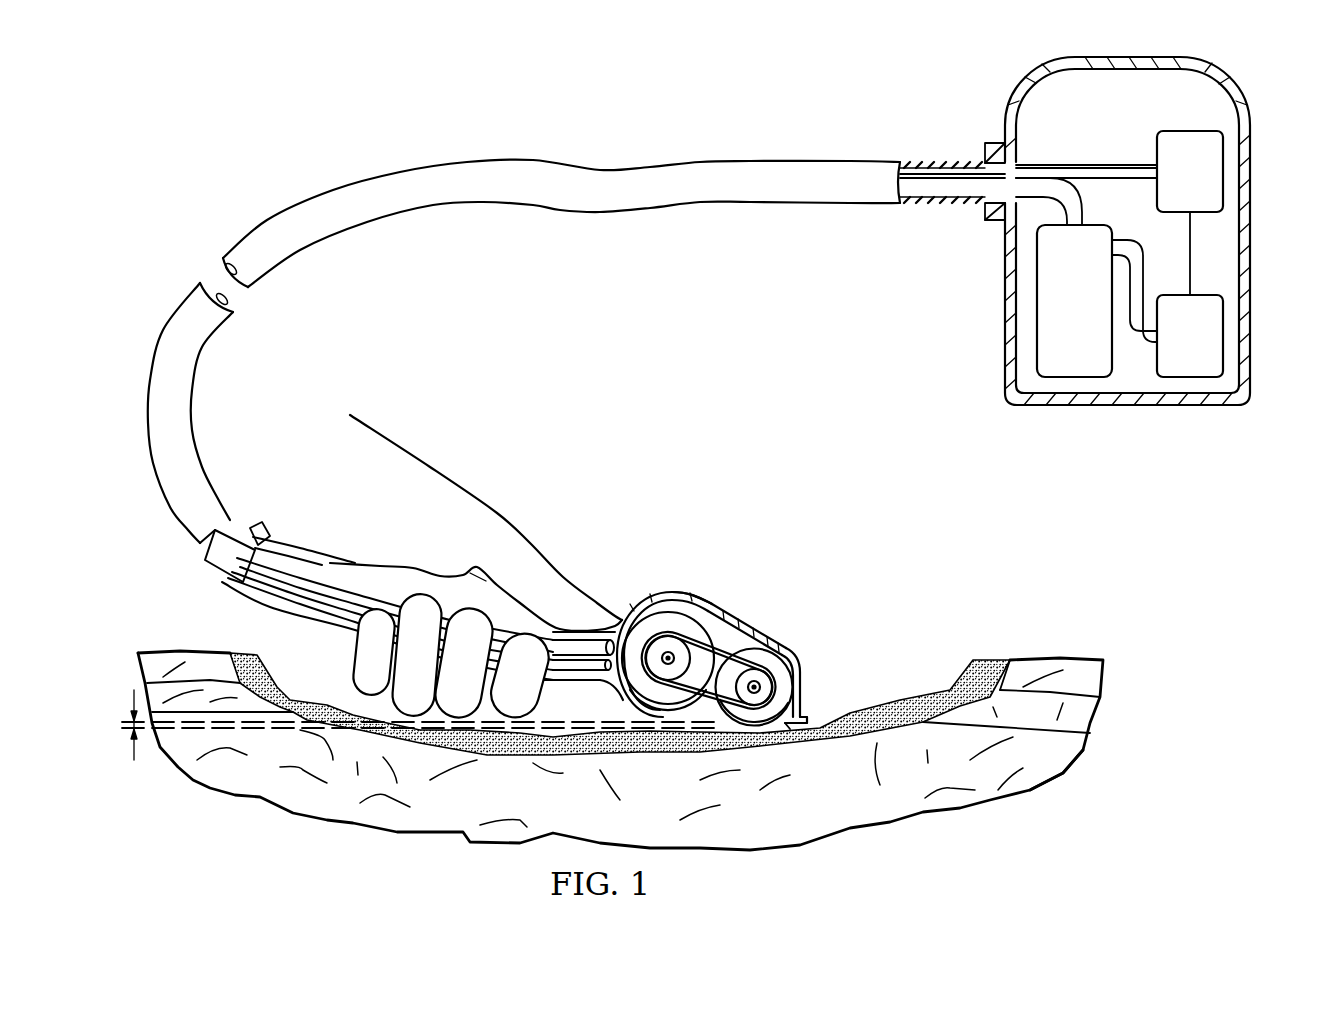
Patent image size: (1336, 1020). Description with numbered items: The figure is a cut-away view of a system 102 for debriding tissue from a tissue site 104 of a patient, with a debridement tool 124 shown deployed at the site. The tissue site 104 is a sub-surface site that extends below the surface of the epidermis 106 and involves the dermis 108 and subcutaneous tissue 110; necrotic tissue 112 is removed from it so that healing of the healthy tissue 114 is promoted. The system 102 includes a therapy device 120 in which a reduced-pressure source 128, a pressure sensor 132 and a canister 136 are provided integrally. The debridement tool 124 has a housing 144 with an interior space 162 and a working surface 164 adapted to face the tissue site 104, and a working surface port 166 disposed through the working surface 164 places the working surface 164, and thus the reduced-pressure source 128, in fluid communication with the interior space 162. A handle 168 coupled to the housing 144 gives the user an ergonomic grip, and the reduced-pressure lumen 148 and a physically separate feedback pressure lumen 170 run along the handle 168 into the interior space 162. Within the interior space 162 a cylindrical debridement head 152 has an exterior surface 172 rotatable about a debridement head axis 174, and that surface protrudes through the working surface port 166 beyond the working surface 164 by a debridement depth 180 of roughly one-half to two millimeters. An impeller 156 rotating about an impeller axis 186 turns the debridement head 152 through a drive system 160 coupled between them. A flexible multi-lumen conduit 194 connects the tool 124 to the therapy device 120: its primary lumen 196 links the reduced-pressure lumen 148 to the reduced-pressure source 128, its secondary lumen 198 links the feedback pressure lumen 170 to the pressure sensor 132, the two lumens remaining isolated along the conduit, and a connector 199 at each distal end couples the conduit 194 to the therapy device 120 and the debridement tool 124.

The system 102 is at (226, 168).
The tissue site 104 is at (893, 808).
The epidermis 106 is at (1105, 670).
The dermis 108 is at (1095, 718).
The subcutaneous tissue 110 is at (1085, 752).
The necrotic tissue 112 is at (990, 660).
The healthy tissue 114 is at (1062, 660).
The therapy device 120 is at (1073, 417).
The debridement tool 124 is at (792, 645).
The reduced-pressure source 128 is at (1188, 370).
The pressure sensor 132 is at (1217, 178).
The canister 136 is at (1043, 337).
The housing 144 is at (714, 606).
The reduced-pressure lumen 148 is at (619, 648).
The debridement head 152 is at (760, 727).
The impeller 156 is at (668, 656).
The drive system 160 is at (730, 642).
The interior space 162 is at (697, 704).
The working surface 164 is at (809, 725).
The working surface port 166 is at (775, 735).
The handle 168 is at (270, 607).
The feedback pressure lumen 170 is at (572, 660).
The exterior surface 172 is at (725, 720).
The debridement head axis 174 is at (758, 687).
The debridement depth 180 is at (134, 752).
The impeller axis 186 is at (694, 600).
The multi-lumen conduit 194 is at (597, 166).
The primary lumen 196 is at (927, 199).
The secondary lumen 198 is at (922, 167).
The connector 199 is at (986, 142).